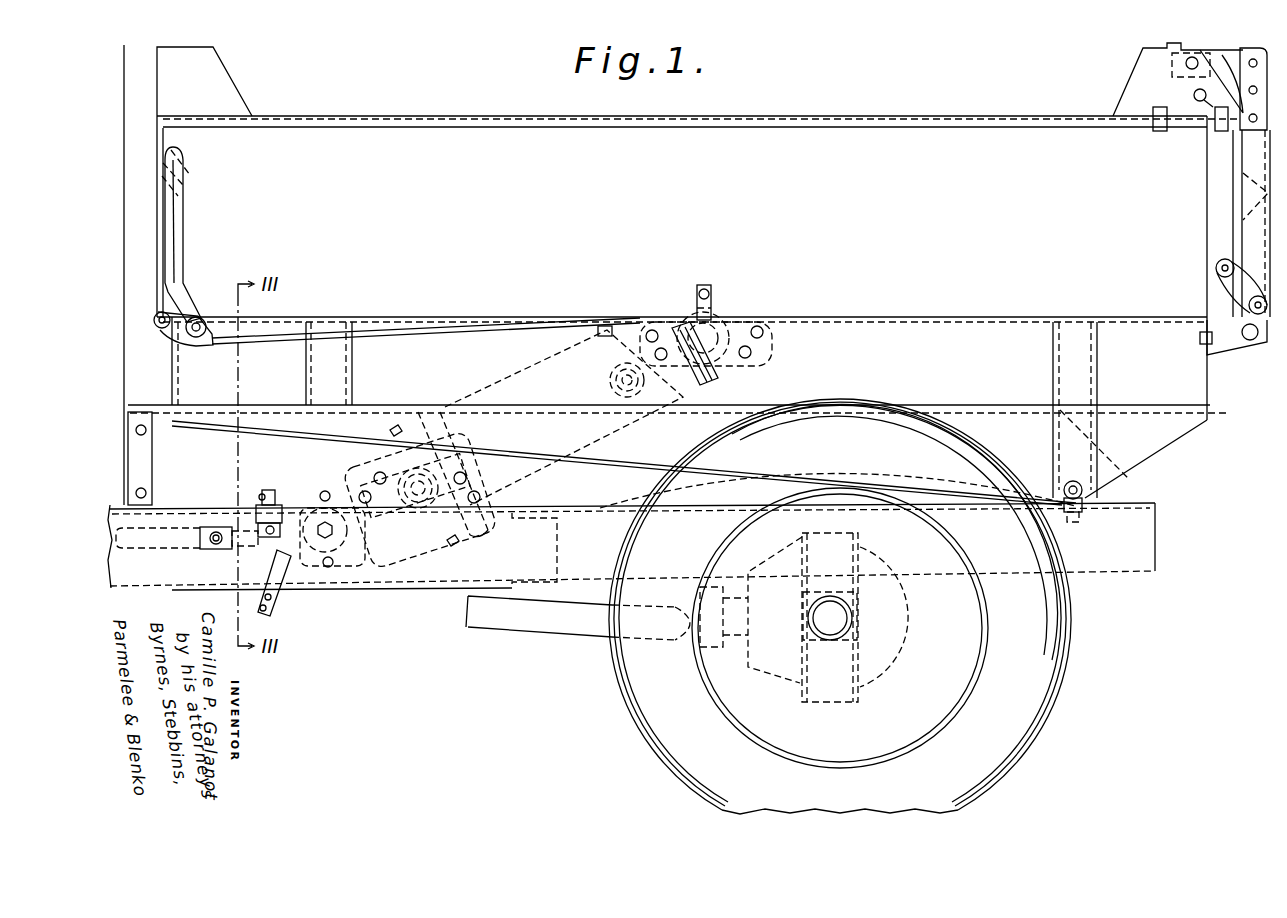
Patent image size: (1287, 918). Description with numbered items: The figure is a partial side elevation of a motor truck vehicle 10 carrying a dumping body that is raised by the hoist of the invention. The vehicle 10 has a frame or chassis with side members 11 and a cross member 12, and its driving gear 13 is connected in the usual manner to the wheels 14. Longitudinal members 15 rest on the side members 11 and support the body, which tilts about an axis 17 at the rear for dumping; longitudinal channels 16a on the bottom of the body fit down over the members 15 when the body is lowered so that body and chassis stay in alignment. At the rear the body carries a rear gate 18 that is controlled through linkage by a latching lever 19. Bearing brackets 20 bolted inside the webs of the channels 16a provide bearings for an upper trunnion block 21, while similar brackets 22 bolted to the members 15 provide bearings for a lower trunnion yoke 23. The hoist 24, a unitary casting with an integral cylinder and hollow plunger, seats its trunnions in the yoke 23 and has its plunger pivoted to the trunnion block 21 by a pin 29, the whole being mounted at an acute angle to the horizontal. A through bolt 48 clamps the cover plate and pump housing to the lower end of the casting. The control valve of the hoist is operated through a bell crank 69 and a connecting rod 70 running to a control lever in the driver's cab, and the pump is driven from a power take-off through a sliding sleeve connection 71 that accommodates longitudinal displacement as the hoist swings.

The vehicle 10 is at (401, 589).
The side members 11 is at (1117, 560).
The cross member 12 is at (562, 547).
The driving gear 13 is at (792, 688).
The wheels 14 is at (655, 734).
The longitudinal members 15 is at (1124, 490).
The longitudinal channels 16a is at (888, 340).
The axis 17 is at (1084, 500).
The rear gate 18 is at (1262, 241).
The latching lever 19 is at (175, 240).
The bearing brackets 20 is at (770, 338).
The upper trunnion block 21 is at (713, 366).
The brackets 22 is at (485, 481).
The lower trunnion yoke 23 is at (437, 548).
The hoist 24 is at (483, 390).
The pin 29 is at (718, 326).
The through bolt 48 is at (306, 498).
The bell crank 69 is at (289, 586).
The connecting rod 70 is at (219, 586).
The sliding sleeve connection 71 is at (167, 527).